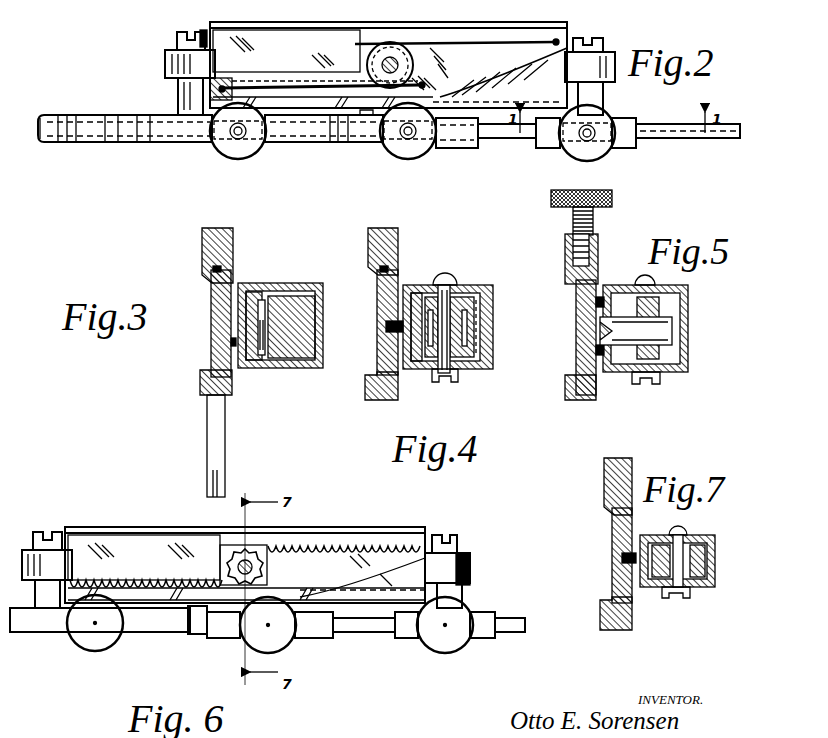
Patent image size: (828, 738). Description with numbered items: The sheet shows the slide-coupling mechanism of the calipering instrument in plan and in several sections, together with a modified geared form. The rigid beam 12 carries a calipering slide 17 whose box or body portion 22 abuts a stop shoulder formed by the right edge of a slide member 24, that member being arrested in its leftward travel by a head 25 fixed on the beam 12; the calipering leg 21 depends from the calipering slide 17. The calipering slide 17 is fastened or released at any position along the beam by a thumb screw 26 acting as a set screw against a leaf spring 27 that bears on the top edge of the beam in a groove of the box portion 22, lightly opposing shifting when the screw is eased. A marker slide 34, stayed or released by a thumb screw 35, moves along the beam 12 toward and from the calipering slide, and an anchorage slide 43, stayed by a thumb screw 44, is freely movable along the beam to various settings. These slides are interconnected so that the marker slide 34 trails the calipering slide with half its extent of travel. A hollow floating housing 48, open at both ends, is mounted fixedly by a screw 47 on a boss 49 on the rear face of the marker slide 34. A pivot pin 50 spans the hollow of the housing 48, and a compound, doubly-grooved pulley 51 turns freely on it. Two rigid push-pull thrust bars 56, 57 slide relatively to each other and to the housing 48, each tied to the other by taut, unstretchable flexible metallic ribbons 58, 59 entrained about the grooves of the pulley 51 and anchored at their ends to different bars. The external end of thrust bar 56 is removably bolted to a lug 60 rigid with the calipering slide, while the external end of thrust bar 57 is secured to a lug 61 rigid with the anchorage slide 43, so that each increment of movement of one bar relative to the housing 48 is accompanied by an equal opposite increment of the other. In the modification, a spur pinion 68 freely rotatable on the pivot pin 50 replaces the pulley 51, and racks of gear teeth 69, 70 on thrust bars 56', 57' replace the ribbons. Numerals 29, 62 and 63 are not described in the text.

In FIG. 2, the beam 12 is at (156, 130).
In FIG. 3, the beam 12 is at (215, 348).
In FIG. 4, the beam 12 is at (382, 342).
In FIG. 5, the beam 12 is at (583, 342).
In FIG. 6, the beam 12 is at (516, 624).
In FIG. 7, the beam 12 is at (614, 588).
In FIG. 2, the calipering slide 17 is at (176, 142).
In FIG. 3, the calipering slide 17 is at (205, 380).
In FIG. 6, the calipering slide 17 is at (44, 629).
In FIG. 3, the calipering leg 21 is at (212, 428).
In FIG. 2, the box or body portion of slide 22 is at (290, 142).
In FIG. 3, the box or body portion of slide 22 is at (207, 265).
In FIG. 2, the slide member 24 is at (92, 142).
In FIG. 2, the head 25 is at (53, 115).
In FIG. 2, the thumb screw 26 is at (258, 150).
In FIG. 6, the thumb screw 26 is at (85, 648).
In FIG. 3, the leaf spring 27 is at (222, 269).
In FIG. 4, the leaf spring 27 is at (388, 268).
In FIG. 5, the leaf spring 27 is at (570, 275).
In FIG. 3, the slot 29 is at (214, 490).
In FIG. 2, the marker slide 34 is at (462, 148).
In FIG. 4, the marker slide 34 is at (372, 252).
In FIG. 6, the marker slide 34 is at (222, 638).
In FIG. 7, the marker slide 34 is at (610, 492).
In FIG. 2, the thumb screw 35 is at (424, 152).
In FIG. 6, the thumb screw 35 is at (282, 648).
In FIG. 2, the anchorage slide 43 is at (620, 148).
In FIG. 5, the anchorage slide 43 is at (578, 398).
In FIG. 6, the anchorage slide 43 is at (482, 638).
In FIG. 2, the thumb screw 44 is at (568, 150).
In FIG. 5, the thumb screw 44 is at (557, 200).
In FIG. 6, the thumb screw 44 is at (430, 648).
In FIG. 4, the screw 47 is at (388, 326).
In FIG. 7, the screw 47 is at (622, 558).
In FIG. 2, the housing 48 is at (500, 36).
In FIG. 3, the housing 48 is at (318, 368).
In FIG. 4, the housing 48 is at (493, 326).
In FIG. 5, the housing 48 is at (672, 372).
In FIG. 6, the housing 48 is at (245, 554).
In FIG. 7, the housing 48 is at (655, 590).
In FIG. 2, the boss 49 is at (366, 118).
In FIG. 4, the boss 49 is at (445, 272).
In FIG. 2, the pivot pin 50 is at (397, 64).
In FIG. 4, the pivot pin 50 is at (460, 377).
In FIG. 5, the pivot pin 50 is at (646, 378).
In FIG. 7, the pivot pin 50 is at (688, 597).
In FIG. 2, the compound pulley 51 is at (393, 56).
In FIG. 4, the compound pulley 51 is at (455, 292).
In FIG. 2, the thrust bar 56 is at (286, 51).
In FIG. 3, the thrust bar 56 is at (301, 309).
In FIG. 4, the thrust bar 56 is at (490, 327).
In FIG. 6, the thrust bar 56' is at (144, 557).
In FIG. 2, the thrust bar 57 is at (440, 89).
In FIG. 3, the thrust bar 57 is at (275, 310).
In FIG. 4, the thrust bar 57 is at (412, 345).
In FIG. 5, the thrust bar 57 is at (629, 349).
In FIG. 6, the thrust bar 57' is at (362, 575).
In FIG. 2, the flexible metallic ribbon 58 is at (356, 44).
In FIG. 3, the flexible metallic ribbon 58 is at (263, 356).
In FIG. 4, the flexible metallic ribbon 58 is at (500, 342).
In FIG. 2, the flexible metallic ribbon 59 is at (436, 66).
In FIG. 4, the flexible metallic ribbon 59 is at (488, 302).
In FIG. 7, the flexible metallic ribbon 59 is at (712, 552).
In FIG. 2, the lug 60 is at (183, 90).
In FIG. 3, the lug 60 is at (233, 346).
In FIG. 6, the lug 60 is at (40, 598).
In FIG. 2, the lug 61 is at (603, 96).
In FIG. 5, the lug 61 is at (598, 318).
In FIG. 6, the lug 61 is at (462, 590).
In FIG. 2, the post cap 62 is at (177, 47).
In FIG. 5, the post cap 62 is at (672, 332).
In FIG. 6, the post cap 62 is at (40, 532).
In FIG. 2, the post cap 63 is at (578, 38).
In FIG. 6, the post cap 63 is at (460, 548).
In FIG. 6, the spur pinion 68 is at (242, 552).
In FIG. 7, the spur pinion 68 is at (690, 545).
In FIG. 6, the rack of gear teeth 69 is at (322, 546).
In FIG. 6, the rack of gear teeth 70 is at (168, 588).
In FIG. 7, the rack of gear teeth 70 is at (658, 548).